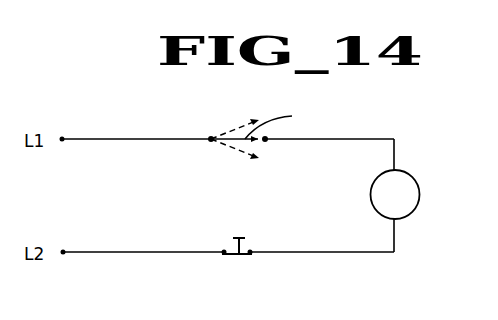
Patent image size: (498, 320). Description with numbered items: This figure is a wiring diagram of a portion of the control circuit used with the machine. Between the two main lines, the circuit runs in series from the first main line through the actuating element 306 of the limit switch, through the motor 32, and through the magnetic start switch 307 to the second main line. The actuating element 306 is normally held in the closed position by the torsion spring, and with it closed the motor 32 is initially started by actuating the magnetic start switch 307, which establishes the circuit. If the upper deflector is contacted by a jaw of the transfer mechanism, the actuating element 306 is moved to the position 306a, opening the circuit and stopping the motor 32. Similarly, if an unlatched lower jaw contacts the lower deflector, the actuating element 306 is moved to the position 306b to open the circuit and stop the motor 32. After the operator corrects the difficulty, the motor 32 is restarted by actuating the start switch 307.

The actuating element 306 is at (267, 126).
The position of actuating element 306a is at (228, 131).
The position of actuating element 306b is at (242, 149).
The motor 32 is at (403, 187).
The magnetic start switch 307 is at (240, 258).